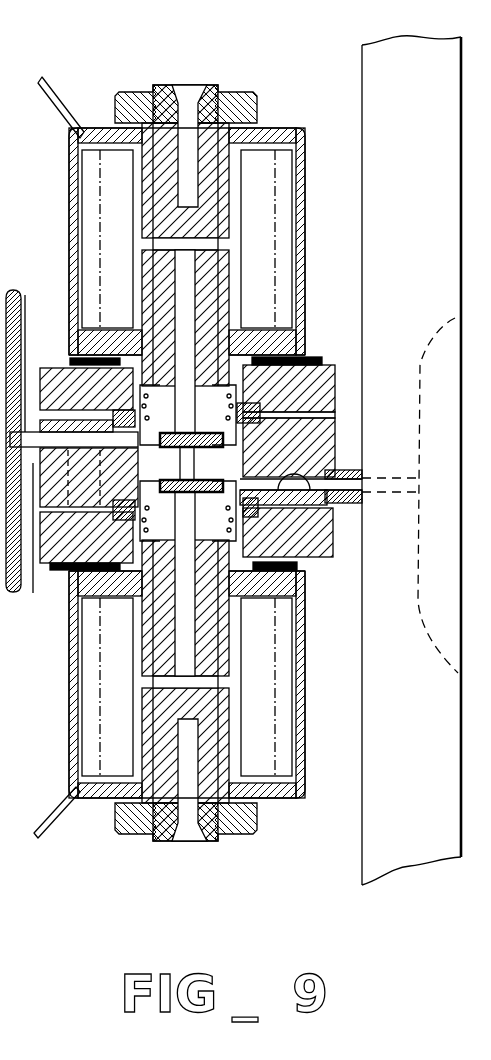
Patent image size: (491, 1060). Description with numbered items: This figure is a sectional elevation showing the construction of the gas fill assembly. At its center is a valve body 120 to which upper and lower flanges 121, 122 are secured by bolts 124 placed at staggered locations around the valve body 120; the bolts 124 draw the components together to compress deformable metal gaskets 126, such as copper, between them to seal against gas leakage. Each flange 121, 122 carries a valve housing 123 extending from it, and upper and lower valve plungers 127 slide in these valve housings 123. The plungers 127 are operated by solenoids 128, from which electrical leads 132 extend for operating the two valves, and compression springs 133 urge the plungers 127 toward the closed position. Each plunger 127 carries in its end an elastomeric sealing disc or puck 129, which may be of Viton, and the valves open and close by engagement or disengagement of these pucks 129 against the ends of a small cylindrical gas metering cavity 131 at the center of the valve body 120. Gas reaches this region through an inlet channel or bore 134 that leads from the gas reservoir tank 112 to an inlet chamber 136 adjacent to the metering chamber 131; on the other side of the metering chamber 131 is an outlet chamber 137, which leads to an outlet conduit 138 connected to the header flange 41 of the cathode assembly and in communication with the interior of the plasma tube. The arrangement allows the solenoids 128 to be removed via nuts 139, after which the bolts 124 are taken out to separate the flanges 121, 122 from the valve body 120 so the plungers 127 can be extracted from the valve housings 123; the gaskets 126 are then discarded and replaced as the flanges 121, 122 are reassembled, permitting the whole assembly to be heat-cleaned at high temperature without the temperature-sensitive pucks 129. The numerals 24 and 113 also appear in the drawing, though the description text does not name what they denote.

The flow direction arrow 24 is at (55, 852).
The header flange 41 is at (362, 60).
The gas reservoir tank 112 is at (23, 263).
The bearing assembly 113 is at (58, 690).
The valve body 120 is at (318, 432).
The upper flange 121 is at (300, 398).
The lower flange 122 is at (320, 566).
The valve housing 123 is at (236, 266).
The bolts 124 is at (330, 440).
The deformable metal gaskets 126 is at (82, 346).
The valve plungers 127 is at (226, 298).
The solenoids 128 is at (287, 183).
The elastomeric sealing discs or pucks 129 is at (300, 417).
The gas metering cavity 131 is at (262, 446).
The electrical leads 132 is at (58, 92).
The compression springs 133 is at (138, 388).
The inlet channel or bore 134 is at (56, 400).
The inlet chamber 136 is at (230, 383).
The outlet chamber 137 is at (234, 565).
The outlet conduit 138 is at (325, 498).
The nuts 139 is at (246, 87).